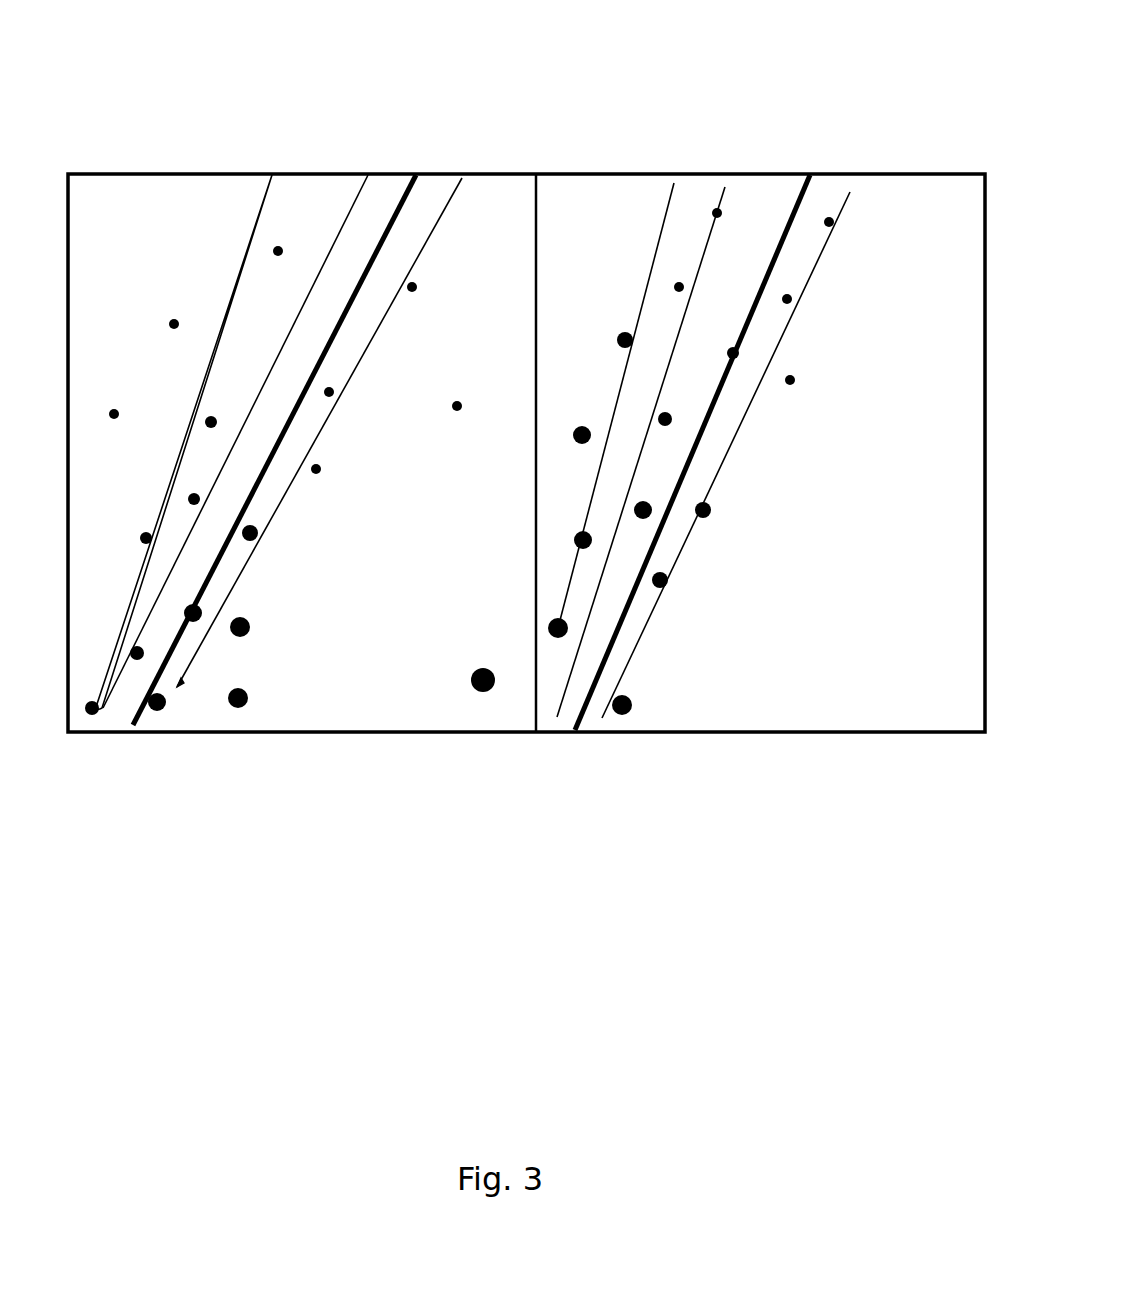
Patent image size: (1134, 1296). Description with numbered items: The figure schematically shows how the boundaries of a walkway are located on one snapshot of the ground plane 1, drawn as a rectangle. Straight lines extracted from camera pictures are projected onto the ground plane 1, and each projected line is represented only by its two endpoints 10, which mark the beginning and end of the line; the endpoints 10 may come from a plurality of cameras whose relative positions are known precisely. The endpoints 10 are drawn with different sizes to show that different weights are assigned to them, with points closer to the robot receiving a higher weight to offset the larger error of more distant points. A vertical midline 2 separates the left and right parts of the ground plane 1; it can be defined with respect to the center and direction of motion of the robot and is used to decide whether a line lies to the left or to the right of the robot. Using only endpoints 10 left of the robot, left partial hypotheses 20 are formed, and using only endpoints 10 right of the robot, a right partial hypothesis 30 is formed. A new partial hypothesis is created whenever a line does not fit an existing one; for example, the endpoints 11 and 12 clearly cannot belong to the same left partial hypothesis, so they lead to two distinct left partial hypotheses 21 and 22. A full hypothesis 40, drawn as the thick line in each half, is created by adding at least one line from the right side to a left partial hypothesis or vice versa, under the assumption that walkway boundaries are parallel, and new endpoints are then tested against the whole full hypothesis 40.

The ground plane 1 is at (820, 754).
The midline 2 is at (553, 158).
The endpoints 10 is at (561, 466).
The endpoint 11 is at (172, 287).
The endpoint 12 is at (451, 291).
The left partial hypothesis 20 is at (423, 180).
The left partial hypothesis 21 is at (228, 206).
The left partial hypothesis 22 is at (469, 154).
The right partial hypothesis 30 is at (694, 164).
The full hypothesis 40 is at (152, 741).